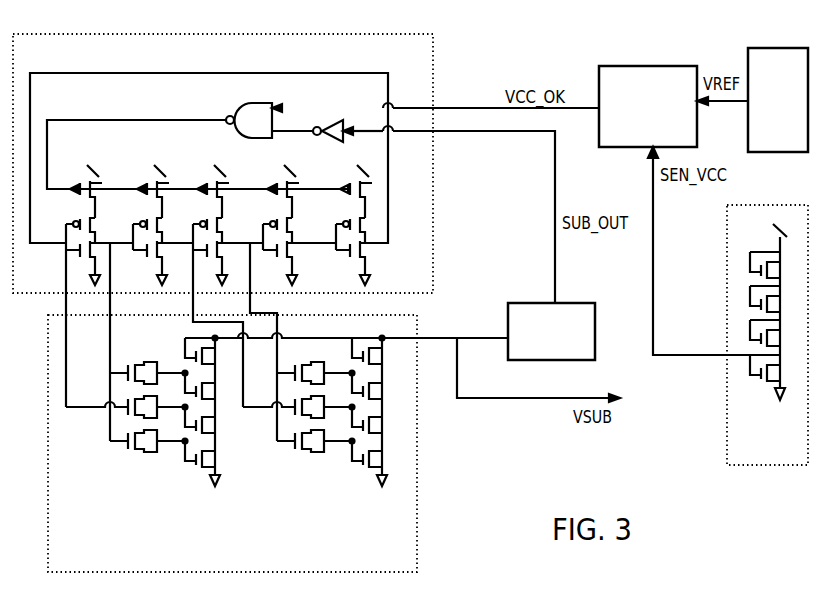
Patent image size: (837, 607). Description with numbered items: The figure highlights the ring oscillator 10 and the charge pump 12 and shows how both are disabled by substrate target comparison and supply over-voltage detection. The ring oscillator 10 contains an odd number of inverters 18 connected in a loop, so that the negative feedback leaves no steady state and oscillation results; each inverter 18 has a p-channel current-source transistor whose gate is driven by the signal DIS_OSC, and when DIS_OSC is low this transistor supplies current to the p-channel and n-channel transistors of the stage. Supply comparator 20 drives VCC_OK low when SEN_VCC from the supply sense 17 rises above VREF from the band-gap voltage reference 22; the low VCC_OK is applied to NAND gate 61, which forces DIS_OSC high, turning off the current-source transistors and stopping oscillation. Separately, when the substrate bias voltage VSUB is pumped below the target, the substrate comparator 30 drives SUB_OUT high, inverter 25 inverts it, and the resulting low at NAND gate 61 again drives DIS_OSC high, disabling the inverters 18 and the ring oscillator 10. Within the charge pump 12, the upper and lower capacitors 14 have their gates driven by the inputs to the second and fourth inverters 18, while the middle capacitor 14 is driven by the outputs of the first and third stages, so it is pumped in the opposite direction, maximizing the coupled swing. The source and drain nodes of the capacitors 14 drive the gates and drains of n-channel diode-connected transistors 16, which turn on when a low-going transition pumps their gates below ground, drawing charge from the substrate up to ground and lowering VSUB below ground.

The ring oscillator 10 is at (223, 237).
The charge pump 12 is at (232, 443).
The capacitors 14 is at (140, 465).
The n-channel diode-connected transistors 16 is at (187, 478).
The supply sense 17 is at (767, 335).
The inverters 18 is at (152, 181).
The supply comparator 20 is at (648, 106).
The band-gap voltage reference 22 is at (778, 100).
The inverter 25 is at (327, 139).
The substrate comparator 30 is at (551, 331).
The NAND gate 61 is at (237, 104).